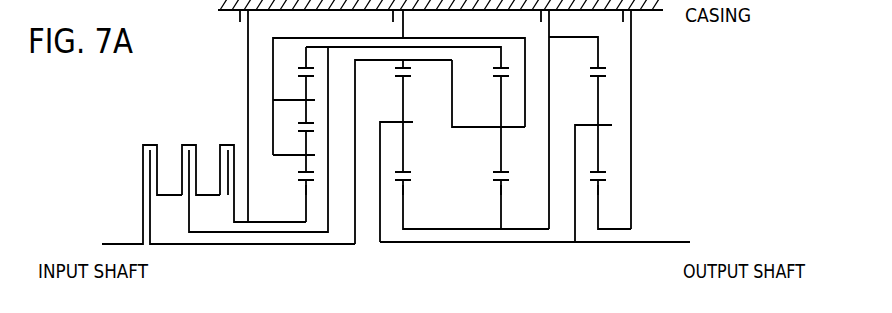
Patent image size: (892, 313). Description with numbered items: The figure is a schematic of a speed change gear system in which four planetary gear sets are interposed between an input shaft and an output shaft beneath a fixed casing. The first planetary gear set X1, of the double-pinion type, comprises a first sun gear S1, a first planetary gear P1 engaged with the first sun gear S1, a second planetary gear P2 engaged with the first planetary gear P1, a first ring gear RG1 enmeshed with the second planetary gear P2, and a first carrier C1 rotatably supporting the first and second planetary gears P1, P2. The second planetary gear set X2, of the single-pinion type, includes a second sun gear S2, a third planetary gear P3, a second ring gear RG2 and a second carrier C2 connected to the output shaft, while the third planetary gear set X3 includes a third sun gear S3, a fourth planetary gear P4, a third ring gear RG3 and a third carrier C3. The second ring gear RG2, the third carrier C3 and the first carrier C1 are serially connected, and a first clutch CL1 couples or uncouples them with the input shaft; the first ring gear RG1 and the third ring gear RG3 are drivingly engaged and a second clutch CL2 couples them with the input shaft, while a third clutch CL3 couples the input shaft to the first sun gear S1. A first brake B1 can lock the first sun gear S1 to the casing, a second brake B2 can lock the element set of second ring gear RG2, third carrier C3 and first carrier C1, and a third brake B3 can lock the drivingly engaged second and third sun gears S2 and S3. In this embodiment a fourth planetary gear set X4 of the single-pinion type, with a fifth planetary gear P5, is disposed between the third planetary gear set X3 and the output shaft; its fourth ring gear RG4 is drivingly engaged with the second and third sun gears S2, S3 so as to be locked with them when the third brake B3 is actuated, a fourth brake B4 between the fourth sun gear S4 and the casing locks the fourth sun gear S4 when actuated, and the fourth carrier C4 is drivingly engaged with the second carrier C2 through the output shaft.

The first clutch CL1 is at (228, 177).
The second clutch CL2 is at (240, 139).
The third clutch CL3 is at (251, 166).
The first brake B1 is at (257, 116).
The second brake B2 is at (399, 82).
The third brake B3 is at (560, 119).
The fourth brake B4 is at (644, 119).
The first ring gear RG1 is at (305, 65).
The second ring gear RG2 is at (404, 62).
The third ring gear RG3 is at (499, 62).
The fourth ring gear RG4 is at (596, 60).
The first planetary gear P1 is at (306, 160).
The second planetary gear P2 is at (307, 84).
The third planetary gear P3 is at (404, 150).
The fourth planetary gear P4 is at (502, 150).
The fifth planetary gear P5 is at (598, 108).
The first carrier C1 is at (280, 152).
The second carrier C2 is at (385, 121).
The third carrier C3 is at (476, 128).
The fourth carrier C4 is at (577, 124).
The first sun gear S1 is at (305, 200).
The second sun gear S2 is at (403, 188).
The third sun gear S3 is at (502, 187).
The fourth sun gear S4 is at (599, 190).
The first planetary gear set X1 is at (303, 195).
The second planetary gear set X2 is at (401, 197).
The third planetary gear set X3 is at (499, 197).
The fourth planetary gear set X4 is at (596, 194).